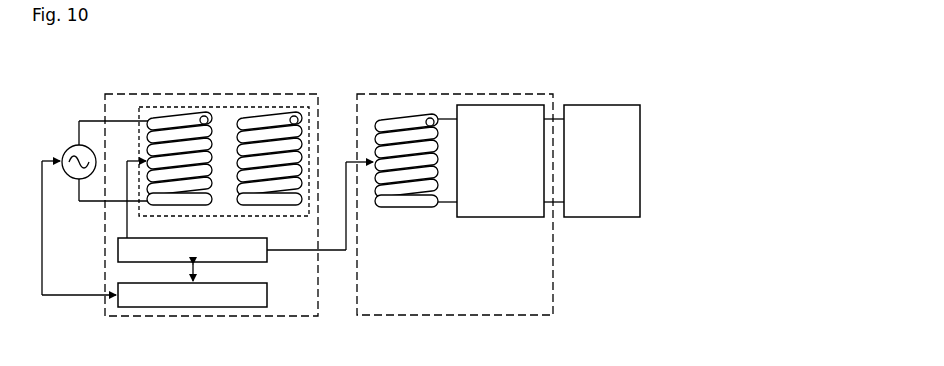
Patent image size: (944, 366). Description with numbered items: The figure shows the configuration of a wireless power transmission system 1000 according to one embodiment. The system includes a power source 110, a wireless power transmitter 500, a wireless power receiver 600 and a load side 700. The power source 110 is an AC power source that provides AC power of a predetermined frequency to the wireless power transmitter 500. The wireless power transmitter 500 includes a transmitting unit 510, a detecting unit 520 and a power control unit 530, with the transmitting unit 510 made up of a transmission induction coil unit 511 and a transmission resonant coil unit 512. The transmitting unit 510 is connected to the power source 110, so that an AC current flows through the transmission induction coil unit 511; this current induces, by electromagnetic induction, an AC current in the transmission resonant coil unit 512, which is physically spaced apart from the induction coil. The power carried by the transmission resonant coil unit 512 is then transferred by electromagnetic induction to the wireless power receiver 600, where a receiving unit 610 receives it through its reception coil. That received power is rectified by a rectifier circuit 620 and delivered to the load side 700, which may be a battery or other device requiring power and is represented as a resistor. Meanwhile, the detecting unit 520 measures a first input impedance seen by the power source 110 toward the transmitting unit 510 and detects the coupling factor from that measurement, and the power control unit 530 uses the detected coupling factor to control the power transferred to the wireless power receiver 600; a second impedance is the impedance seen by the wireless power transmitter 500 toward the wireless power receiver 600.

The wireless power transmission system 1000 is at (77, 53).
The power source 110 is at (67, 150).
The wireless power transmitter 500 is at (137, 94).
The transmitting unit 510 is at (215, 107).
The transmission induction coil unit 511 is at (180, 124).
The transmission resonant coil unit 512 is at (269, 124).
The detecting unit 520 is at (255, 238).
The power control unit 530 is at (267, 295).
The wireless power receiver 600 is at (436, 94).
The receiving unit 610 is at (406, 126).
The rectifier circuit 620 is at (510, 105).
The load side 700 is at (595, 105).